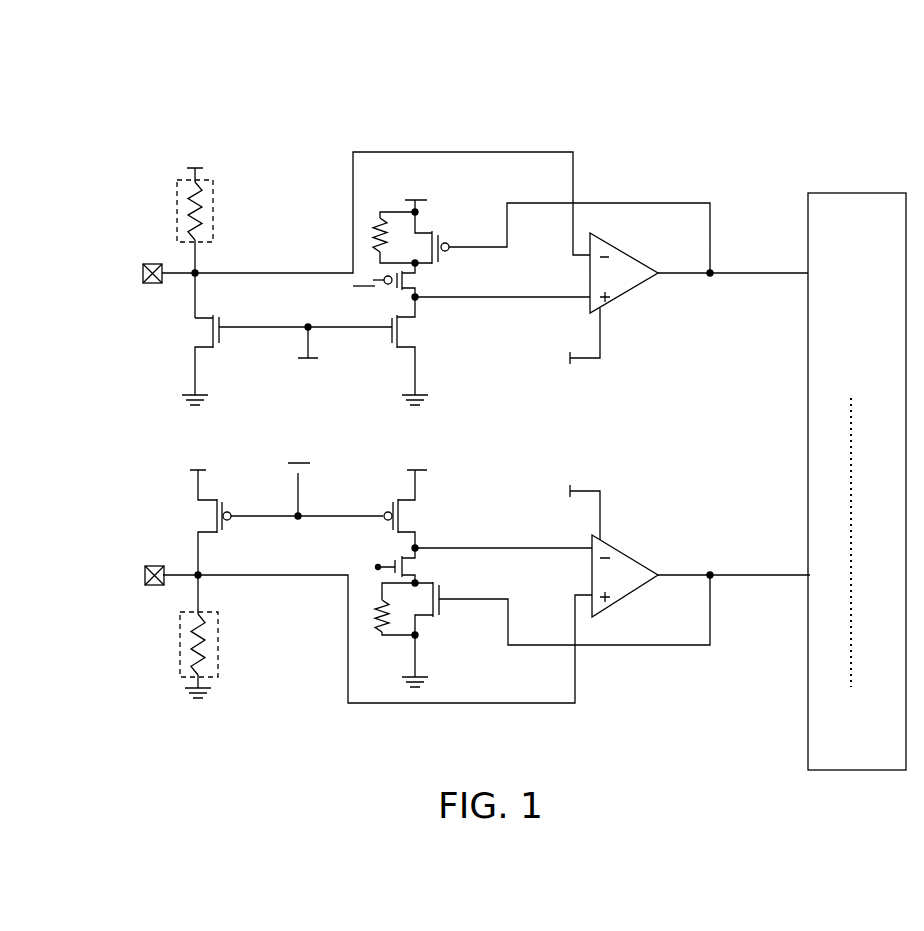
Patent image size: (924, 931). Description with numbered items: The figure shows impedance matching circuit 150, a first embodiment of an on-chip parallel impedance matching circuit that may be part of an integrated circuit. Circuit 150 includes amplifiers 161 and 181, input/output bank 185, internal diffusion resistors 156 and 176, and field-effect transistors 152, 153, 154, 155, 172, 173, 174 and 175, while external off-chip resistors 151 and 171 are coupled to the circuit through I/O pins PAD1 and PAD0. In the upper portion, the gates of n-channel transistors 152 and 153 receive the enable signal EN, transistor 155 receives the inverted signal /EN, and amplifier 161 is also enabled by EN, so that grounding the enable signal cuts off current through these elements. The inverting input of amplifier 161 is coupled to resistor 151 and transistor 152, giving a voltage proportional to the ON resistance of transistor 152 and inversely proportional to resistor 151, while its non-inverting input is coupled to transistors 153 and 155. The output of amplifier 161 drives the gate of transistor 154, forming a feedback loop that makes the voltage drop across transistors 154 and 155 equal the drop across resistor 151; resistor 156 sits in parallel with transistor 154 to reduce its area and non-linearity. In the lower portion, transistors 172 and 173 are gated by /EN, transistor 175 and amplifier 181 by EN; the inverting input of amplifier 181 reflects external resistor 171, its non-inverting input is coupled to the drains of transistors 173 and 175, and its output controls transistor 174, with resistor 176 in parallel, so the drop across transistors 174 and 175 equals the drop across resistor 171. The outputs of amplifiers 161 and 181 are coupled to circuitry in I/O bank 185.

The impedance matching circuit 150 is at (758, 98).
The external resistor 151 is at (177, 198).
The n-channel transistor 152 is at (224, 334).
The n-channel transistor 153 is at (389, 337).
The transistor 154 is at (448, 253).
The transistor 155 is at (432, 282).
The resistor 156 is at (377, 218).
The amplifier 161 is at (621, 300).
The external resistor 171 is at (182, 658).
The transistor 172 is at (225, 528).
The transistor 173 is at (388, 503).
The transistor 174 is at (444, 605).
The transistor 175 is at (414, 565).
The resistor 176 is at (374, 612).
The amplifier 181 is at (620, 547).
The input/output bank 185 is at (838, 192).